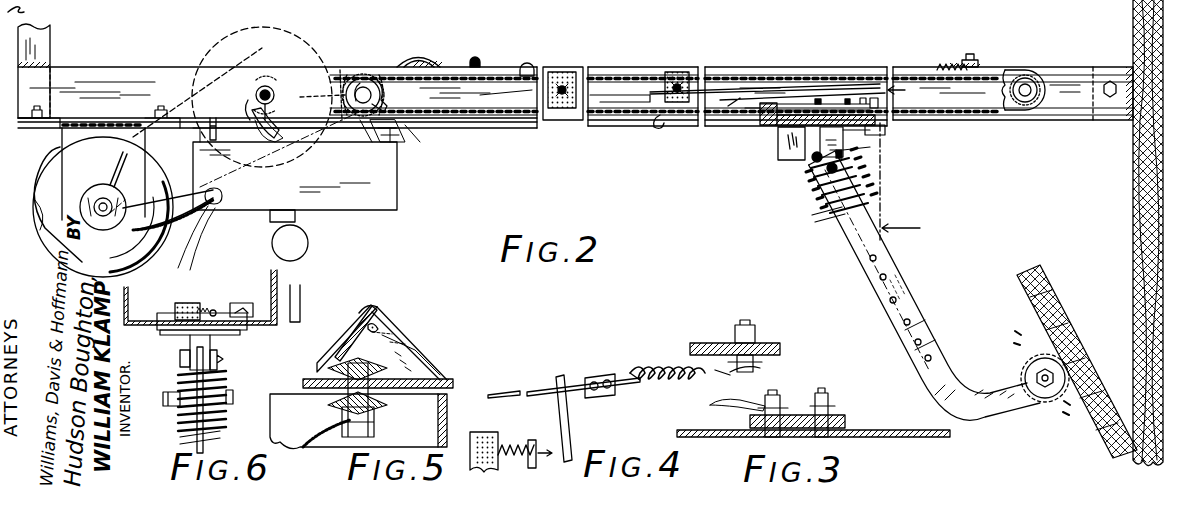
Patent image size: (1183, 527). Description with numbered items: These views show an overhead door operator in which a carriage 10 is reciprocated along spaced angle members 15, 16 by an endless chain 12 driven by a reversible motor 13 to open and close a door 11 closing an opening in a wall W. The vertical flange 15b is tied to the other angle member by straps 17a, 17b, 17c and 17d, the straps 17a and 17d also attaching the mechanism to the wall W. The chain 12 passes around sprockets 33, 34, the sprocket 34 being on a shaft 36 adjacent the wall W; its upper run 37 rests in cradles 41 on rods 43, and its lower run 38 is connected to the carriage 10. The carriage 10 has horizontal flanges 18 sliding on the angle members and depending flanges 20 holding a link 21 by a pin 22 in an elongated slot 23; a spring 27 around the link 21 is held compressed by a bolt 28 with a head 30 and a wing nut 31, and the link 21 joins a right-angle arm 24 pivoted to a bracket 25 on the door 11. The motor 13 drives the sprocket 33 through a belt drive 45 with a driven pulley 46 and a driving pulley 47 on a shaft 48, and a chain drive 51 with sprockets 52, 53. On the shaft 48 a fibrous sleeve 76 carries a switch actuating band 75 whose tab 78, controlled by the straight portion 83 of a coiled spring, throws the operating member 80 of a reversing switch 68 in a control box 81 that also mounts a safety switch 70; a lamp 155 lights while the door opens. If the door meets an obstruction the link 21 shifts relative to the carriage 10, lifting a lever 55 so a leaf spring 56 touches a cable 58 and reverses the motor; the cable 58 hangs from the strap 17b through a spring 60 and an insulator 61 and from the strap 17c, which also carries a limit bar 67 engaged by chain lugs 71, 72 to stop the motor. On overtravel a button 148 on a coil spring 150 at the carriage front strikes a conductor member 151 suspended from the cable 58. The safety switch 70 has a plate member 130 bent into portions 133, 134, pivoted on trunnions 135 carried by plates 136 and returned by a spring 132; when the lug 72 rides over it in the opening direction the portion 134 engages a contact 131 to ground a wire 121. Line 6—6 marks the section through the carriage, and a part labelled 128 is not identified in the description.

In FIG. 2, the wall W is at (1135, 185).
In FIG. 2, the overhead door 11 is at (1057, 300).
In FIG. 2, the strap 17d is at (50, 63).
In FIG. 2, the chain 12 is at (812, 74).
In FIG. 2, the upper run 37 is at (745, 72).
In FIG. 2, the vertical flange 15b is at (796, 70).
In FIG. 2, the shaft 36 is at (1040, 76).
In FIG. 2, the sprocket 34 is at (1017, 78).
In FIG. 2, the strap 17a is at (1133, 68).
In FIG. 2, the spring 60 is at (945, 66).
In FIG. 4, the spring 60 is at (668, 370).
In FIG. 2, the strap 17b is at (975, 61).
In FIG. 4, the strap 17b is at (700, 343).
In FIG. 2, the section line 6 is at (901, 161).
In FIG. 2, the belt drive 45 is at (176, 84).
In FIG. 2, the driving pulley 47 is at (213, 44).
In FIG. 2, the shaft 48 is at (278, 88).
In FIG. 2, the switch actuating band 75 is at (255, 90).
In FIG. 2, the sleeve 76 is at (265, 84).
In FIG. 2, the straight portion 83 is at (260, 96).
In FIG. 2, the tab 78 is at (262, 101).
In FIG. 2, the switch operating member 80 is at (252, 150).
In FIG. 2, the sprocket 52 is at (342, 95).
In FIG. 2, the chain drive 51 is at (350, 75).
In FIG. 2, the sprocket 53 is at (368, 78).
In FIG. 2, the sprocket 33 is at (366, 88).
In FIG. 2, the strap 17c is at (432, 63).
In FIG. 3, the strap 17c is at (808, 414).
In FIG. 2, the limit bar 67 is at (474, 66).
In FIG. 3, the limit bar 67 is at (890, 432).
In FIG. 2, the lug 71 is at (529, 71).
In FIG. 2, the rods 43 is at (560, 74).
In FIG. 2, the cradles 41 is at (572, 80).
In FIG. 2, the lower run 38 is at (512, 121).
In FIG. 2, the cable 58 is at (642, 116).
In FIG. 4, the cable 58 is at (538, 390).
In FIG. 2, the lug 72 is at (668, 120).
In FIG. 2, the carriage 10 is at (756, 132).
In FIG. 6, the carriage 10 is at (183, 306).
In FIG. 4, the carriage 10 is at (492, 438).
In FIG. 2, the leaf spring 56 is at (782, 101).
In FIG. 6, the leaf spring 56 is at (240, 306).
In FIG. 2, the lever 55 is at (779, 150).
In FIG. 6, the lever 55 is at (212, 343).
In FIG. 2, the pin 22 is at (812, 166).
In FIG. 6, the pin 22 is at (220, 357).
In FIG. 2, the elongated slot 23 is at (813, 182).
In FIG. 2, the wing nut 31 is at (822, 202).
In FIG. 6, the wing nut 31 is at (168, 408).
In FIG. 2, the bolt 28 is at (858, 182).
In FIG. 6, the bolt 28 is at (168, 397).
In FIG. 2, the spring 27 is at (856, 208).
In FIG. 6, the spring 27 is at (180, 439).
In FIG. 2, the horizontal flanges 18 is at (875, 133).
In FIG. 6, the horizontal flanges 18 is at (170, 320).
In FIG. 2, the vertical flanges 20 is at (862, 150).
In FIG. 6, the vertical flanges 20 is at (188, 350).
In FIG. 2, the link 21 is at (890, 262).
In FIG. 6, the link 21 is at (195, 457).
In FIG. 2, the arm 24 is at (962, 397).
In FIG. 2, the bracket 25 is at (1042, 400).
In FIG. 2, the motor 13 is at (46, 170).
In FIG. 2, the driven pulley 46 is at (83, 203).
In FIG. 2, the reversing switch 68 is at (284, 155).
In FIG. 2, the control box 81 is at (390, 200).
In FIG. 5, the control box 81 is at (440, 418).
In FIG. 2, the trunnions 135 is at (402, 135).
In FIG. 5, the trunnions 135 is at (385, 318).
In FIG. 2, the safety switch 70 is at (410, 150).
In FIG. 5, the safety switch 70 is at (341, 340).
In FIG. 2, the lamp 155 is at (308, 246).
In FIG. 6, the angle member 16 is at (165, 310).
In FIG. 6, the coil spring 150 is at (205, 308).
In FIG. 4, the coil spring 150 is at (530, 462).
In FIG. 6, the head 30 is at (234, 396).
In FIG. 6, the angle member 15 is at (291, 288).
In FIG. 5, the contact 131 is at (350, 340).
In FIG. 5, the spring 132 is at (438, 376).
In FIG. 5, the portion 134 is at (365, 312).
In FIG. 5, the portion 133 is at (400, 335).
In FIG. 5, the plates 136 is at (412, 346).
In FIG. 5, the plate member 130 is at (412, 348).
In FIG. 5, the wire 121 is at (332, 440).
In FIG. 4, the conductor member 151 is at (568, 420).
In FIG. 4, the insulator 61 is at (610, 375).
In FIG. 4, the button 148 is at (530, 445).
In FIG. 3, the hook 128 is at (712, 406).